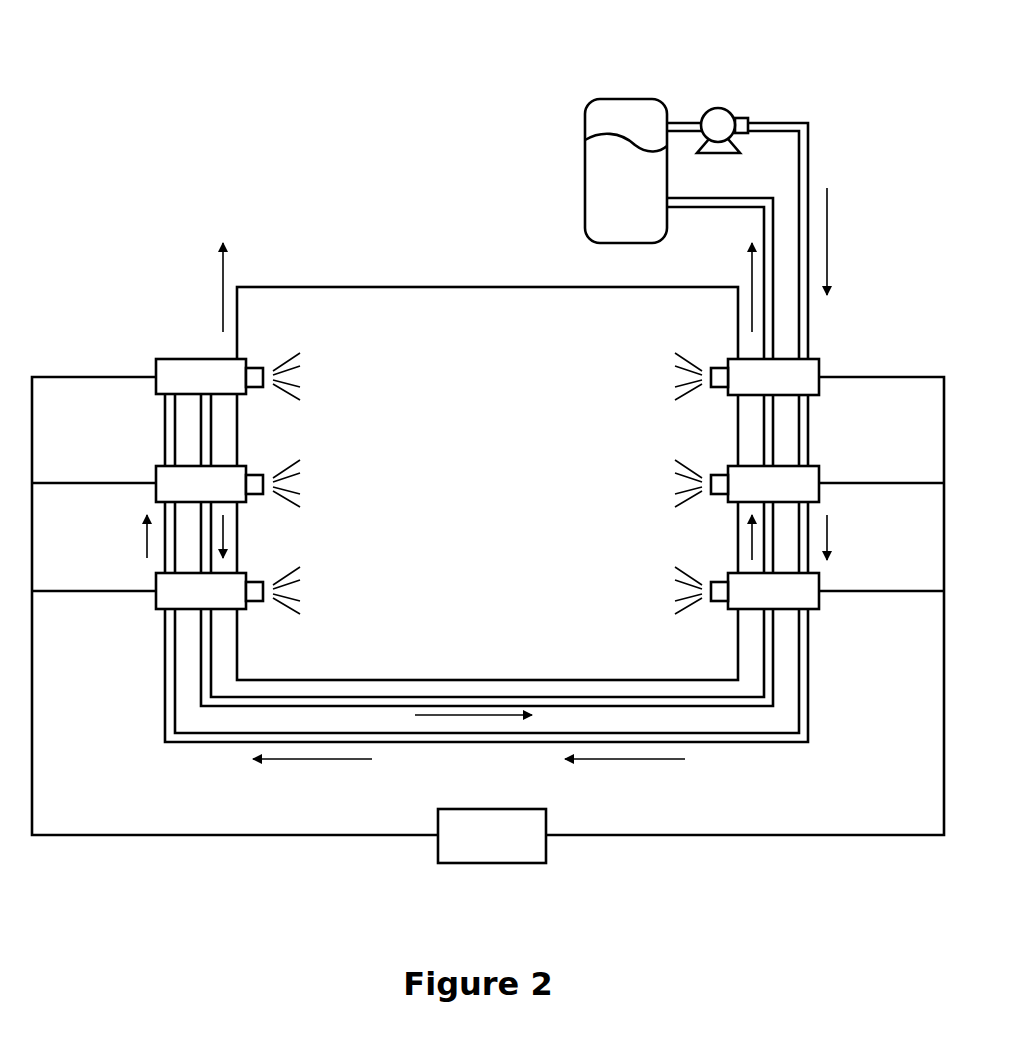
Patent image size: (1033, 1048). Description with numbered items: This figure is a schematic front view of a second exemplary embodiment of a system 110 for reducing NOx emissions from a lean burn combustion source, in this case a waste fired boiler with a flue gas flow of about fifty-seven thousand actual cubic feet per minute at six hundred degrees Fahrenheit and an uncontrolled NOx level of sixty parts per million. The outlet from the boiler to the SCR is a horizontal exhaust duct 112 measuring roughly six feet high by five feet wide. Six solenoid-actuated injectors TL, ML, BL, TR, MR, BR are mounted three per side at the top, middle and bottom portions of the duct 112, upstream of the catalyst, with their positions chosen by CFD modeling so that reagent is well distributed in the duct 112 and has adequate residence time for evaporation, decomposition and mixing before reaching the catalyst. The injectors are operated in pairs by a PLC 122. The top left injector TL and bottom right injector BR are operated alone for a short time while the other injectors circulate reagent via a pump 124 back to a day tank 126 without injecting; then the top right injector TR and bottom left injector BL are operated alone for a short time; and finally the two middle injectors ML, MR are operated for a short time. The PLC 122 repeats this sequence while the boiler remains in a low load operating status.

The system for reducing NOx emissions 110 is at (417, 289).
The horizontal exhaust duct 112 is at (506, 368).
The PLC 122 is at (518, 852).
The pump 124 is at (723, 116).
The day tank 126 is at (615, 118).
The top left injector TL is at (165, 370).
The middle left injector ML is at (237, 495).
The bottom left injector BL is at (165, 600).
The top right injector TR is at (808, 368).
The middle right injector MR is at (737, 495).
The bottom right injector BR is at (808, 600).